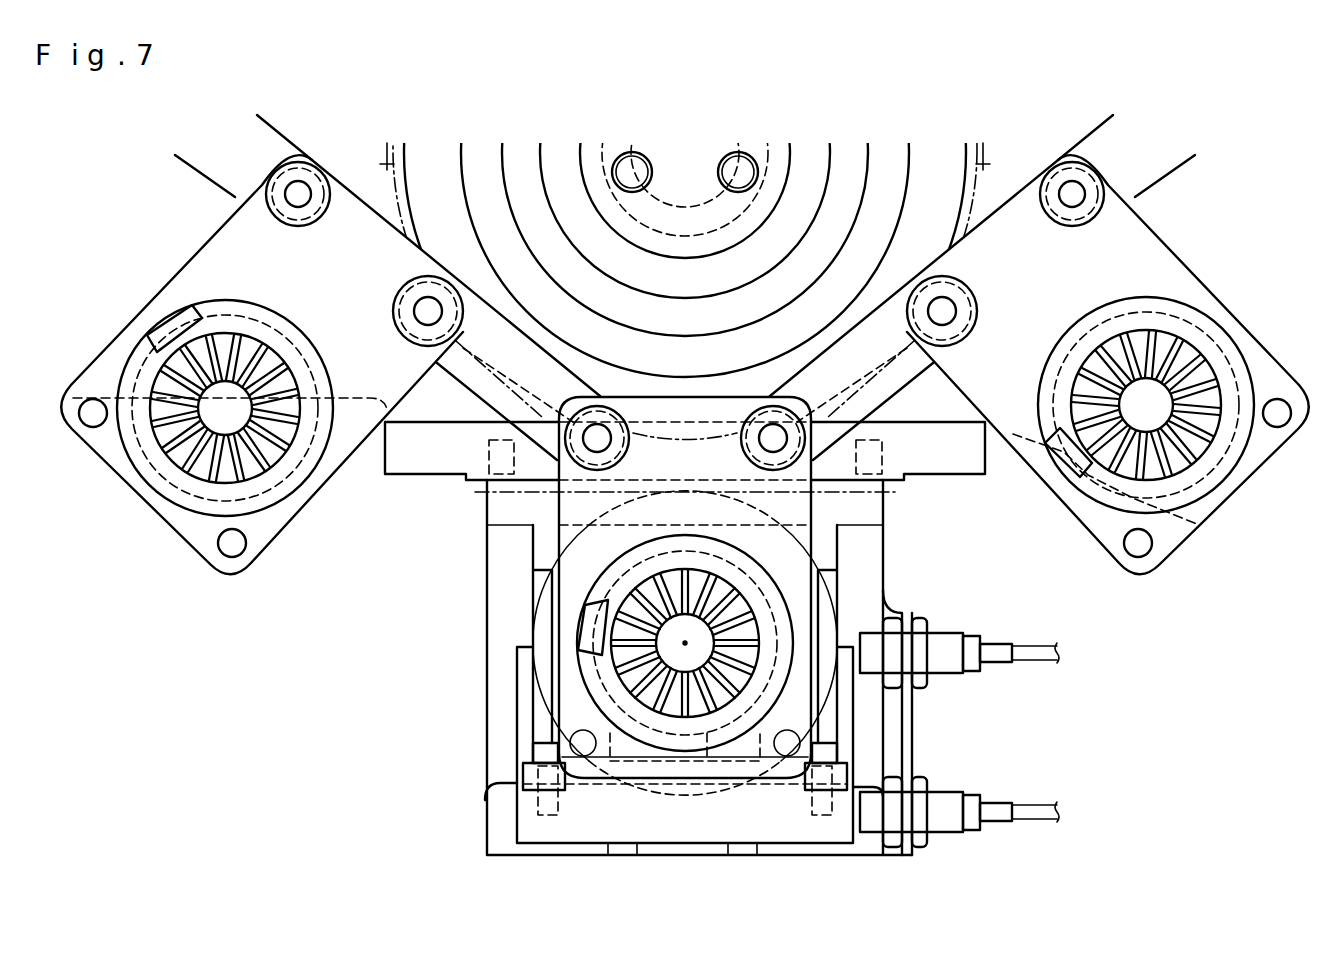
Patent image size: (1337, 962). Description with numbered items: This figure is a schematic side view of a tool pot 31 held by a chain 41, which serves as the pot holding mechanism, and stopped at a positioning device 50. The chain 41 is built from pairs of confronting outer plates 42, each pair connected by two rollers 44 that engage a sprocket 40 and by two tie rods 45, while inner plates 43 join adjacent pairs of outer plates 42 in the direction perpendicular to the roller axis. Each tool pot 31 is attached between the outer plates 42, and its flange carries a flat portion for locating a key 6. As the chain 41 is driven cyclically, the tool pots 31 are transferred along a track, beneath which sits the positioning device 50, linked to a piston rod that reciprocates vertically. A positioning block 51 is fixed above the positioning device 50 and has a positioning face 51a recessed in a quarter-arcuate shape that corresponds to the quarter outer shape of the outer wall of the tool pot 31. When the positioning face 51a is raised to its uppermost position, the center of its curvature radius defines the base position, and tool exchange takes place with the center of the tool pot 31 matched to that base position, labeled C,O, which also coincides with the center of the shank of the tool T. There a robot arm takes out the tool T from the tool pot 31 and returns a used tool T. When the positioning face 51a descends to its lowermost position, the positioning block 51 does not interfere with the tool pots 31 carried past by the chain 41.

The key 6 is at (600, 613).
The tool pot 31 is at (173, 443).
The sprocket 40 is at (387, 163).
The chain 41 is at (182, 211).
The outer plates 42 is at (180, 517).
The inner plates 43 is at (470, 375).
The rollers 44 is at (405, 296).
The tie rods 45 is at (93, 413).
The positioning device 50 is at (462, 830).
The positioning block 51 is at (572, 777).
The positioning face 51a is at (707, 740).
The center of tool pot and base position C,O is at (685, 643).
The tool T is at (550, 695).